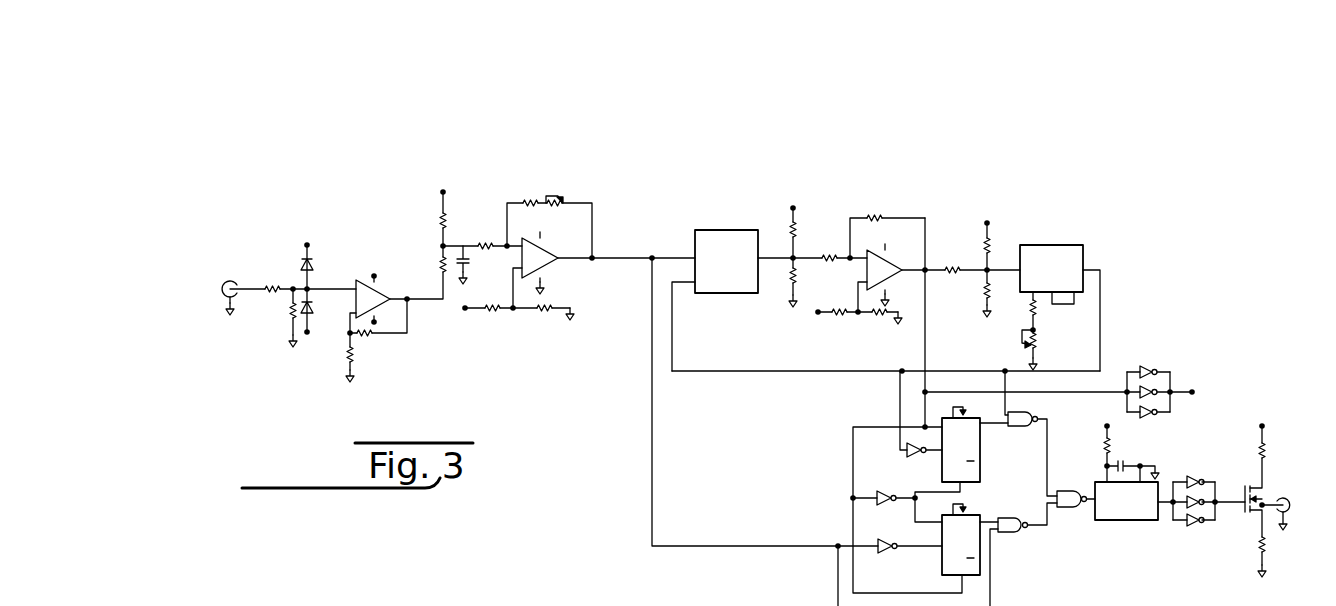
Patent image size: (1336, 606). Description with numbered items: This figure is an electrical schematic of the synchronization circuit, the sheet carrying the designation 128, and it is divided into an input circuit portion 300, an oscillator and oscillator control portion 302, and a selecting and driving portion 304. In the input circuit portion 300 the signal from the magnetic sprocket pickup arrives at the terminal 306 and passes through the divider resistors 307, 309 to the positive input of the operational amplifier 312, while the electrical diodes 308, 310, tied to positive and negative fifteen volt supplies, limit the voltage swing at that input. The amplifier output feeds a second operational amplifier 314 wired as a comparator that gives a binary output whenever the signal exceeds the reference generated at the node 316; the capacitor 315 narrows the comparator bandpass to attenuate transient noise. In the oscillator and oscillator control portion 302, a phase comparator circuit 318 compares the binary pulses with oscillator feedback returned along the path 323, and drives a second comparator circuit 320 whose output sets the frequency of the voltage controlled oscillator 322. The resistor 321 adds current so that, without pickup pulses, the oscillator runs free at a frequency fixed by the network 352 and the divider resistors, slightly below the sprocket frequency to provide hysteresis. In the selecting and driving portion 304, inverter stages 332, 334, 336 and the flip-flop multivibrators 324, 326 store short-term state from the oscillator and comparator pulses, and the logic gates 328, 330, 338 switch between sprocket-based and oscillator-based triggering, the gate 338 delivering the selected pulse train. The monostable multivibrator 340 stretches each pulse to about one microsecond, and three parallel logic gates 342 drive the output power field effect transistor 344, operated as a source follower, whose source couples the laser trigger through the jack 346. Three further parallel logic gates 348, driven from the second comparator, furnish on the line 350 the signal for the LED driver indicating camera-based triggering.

The timing circuit 128 is at (636, 153).
The input circuit portion 300 is at (378, 201).
The oscillator and oscillator control portion 302 is at (888, 184).
The selecting and driving portion 304 is at (1053, 461).
The terminal 306 is at (222, 295).
The divider resistor 307 is at (272, 294).
The electrical diode 308 is at (310, 258).
The divider resistor 309 is at (290, 325).
The electrical diode 310 is at (310, 306).
The operational amplifier 312 is at (387, 294).
The second operational amplifier 314 is at (553, 261).
The capacitor 315 is at (459, 257).
The node 316 is at (514, 312).
The phase comparator circuit 318 is at (722, 230).
The second comparator circuit 320 is at (893, 262).
The resistor 321 is at (948, 274).
The voltage controlled oscillator 322 is at (1040, 245).
The path 323 is at (775, 360).
The flip-flop multivibrator 324 is at (982, 462).
The flip-flop multivibrator 326 is at (982, 568).
The logic gate 328 is at (1022, 411).
The logic gate 330 is at (1015, 532).
The inverter stage 332 is at (905, 452).
The inverter stage 334 is at (877, 498).
The inverter stage 336 is at (878, 546).
The logic gate 338 is at (1068, 491).
The monostable multivibrator 340 is at (1140, 521).
The logic gates 342 is at (1210, 461).
The output power field effect transistor 344 is at (1237, 478).
The jack 346 is at (1291, 512).
The logic gates 348 is at (1165, 337).
The LED driver output line 350 is at (1192, 390).
The network 352 is at (1073, 313).